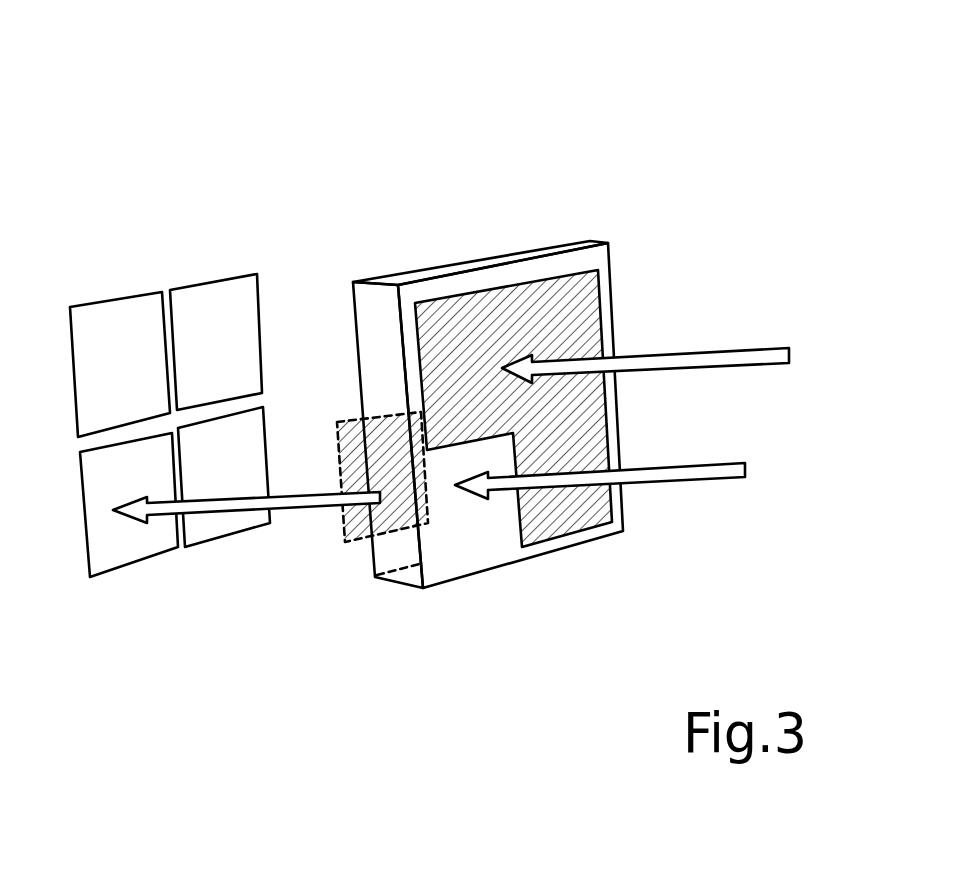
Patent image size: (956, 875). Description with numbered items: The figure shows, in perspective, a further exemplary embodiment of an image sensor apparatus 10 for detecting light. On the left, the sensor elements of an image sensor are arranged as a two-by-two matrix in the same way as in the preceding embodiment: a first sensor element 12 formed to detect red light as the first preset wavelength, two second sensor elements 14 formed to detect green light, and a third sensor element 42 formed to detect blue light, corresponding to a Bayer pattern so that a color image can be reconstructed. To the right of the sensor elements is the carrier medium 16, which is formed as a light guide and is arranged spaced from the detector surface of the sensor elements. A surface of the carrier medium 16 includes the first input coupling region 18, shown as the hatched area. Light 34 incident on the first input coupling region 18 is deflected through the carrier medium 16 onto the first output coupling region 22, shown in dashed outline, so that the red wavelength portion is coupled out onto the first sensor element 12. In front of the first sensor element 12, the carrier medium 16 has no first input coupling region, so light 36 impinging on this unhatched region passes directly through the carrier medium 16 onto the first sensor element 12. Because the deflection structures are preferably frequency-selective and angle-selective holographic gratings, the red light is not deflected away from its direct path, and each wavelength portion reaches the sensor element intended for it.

The image sensor apparatus 10 is at (305, 100).
The first sensor element 12 is at (166, 428).
The second sensor element 14 is at (108, 323).
The third sensor element 42 is at (213, 303).
The carrier medium 16 is at (550, 260).
The first input coupling region 18 is at (543, 528).
The first output coupling region 22 is at (360, 523).
The light 34 is at (680, 358).
The light 36 is at (710, 472).